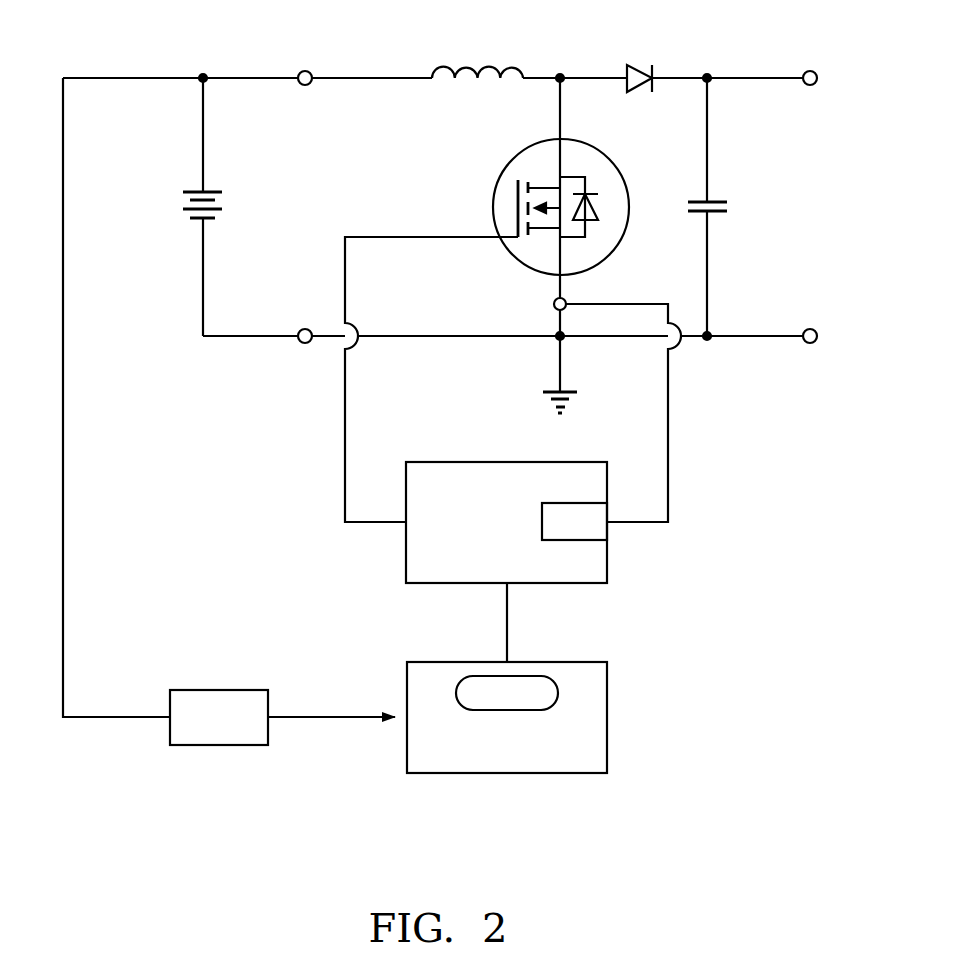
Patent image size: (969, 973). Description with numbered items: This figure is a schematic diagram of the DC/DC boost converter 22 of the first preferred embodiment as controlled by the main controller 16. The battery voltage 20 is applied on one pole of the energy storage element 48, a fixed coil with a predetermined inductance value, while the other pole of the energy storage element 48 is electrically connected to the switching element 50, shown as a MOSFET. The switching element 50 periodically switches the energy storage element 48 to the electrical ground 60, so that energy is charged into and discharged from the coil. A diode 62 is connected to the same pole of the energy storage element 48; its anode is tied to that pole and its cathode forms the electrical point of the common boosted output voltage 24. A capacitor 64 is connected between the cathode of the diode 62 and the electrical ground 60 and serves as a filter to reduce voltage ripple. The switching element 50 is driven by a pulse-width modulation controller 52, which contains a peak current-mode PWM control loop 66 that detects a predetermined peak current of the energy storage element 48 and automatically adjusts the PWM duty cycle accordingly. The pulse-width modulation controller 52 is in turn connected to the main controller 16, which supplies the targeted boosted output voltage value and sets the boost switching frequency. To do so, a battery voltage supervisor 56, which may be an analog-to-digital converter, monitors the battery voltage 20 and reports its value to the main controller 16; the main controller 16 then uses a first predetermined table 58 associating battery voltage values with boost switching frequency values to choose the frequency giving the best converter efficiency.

The main controller 16 is at (573, 741).
The battery voltage 20 is at (263, 78).
The DC/DC boost converter 22 is at (572, 543).
The common boosted output voltage 24 is at (778, 78).
The energy storage element 48 is at (440, 64).
The switching element 50 is at (497, 160).
The pulse-width modulation controller 52 is at (492, 534).
The battery voltage supervisor 56 is at (195, 755).
The first predetermined table 58 is at (492, 705).
The electrical ground 60 is at (562, 378).
The diode 62 is at (650, 60).
The capacitor 64 is at (728, 195).
The peak current-mode PWM control loop 66 is at (561, 534).